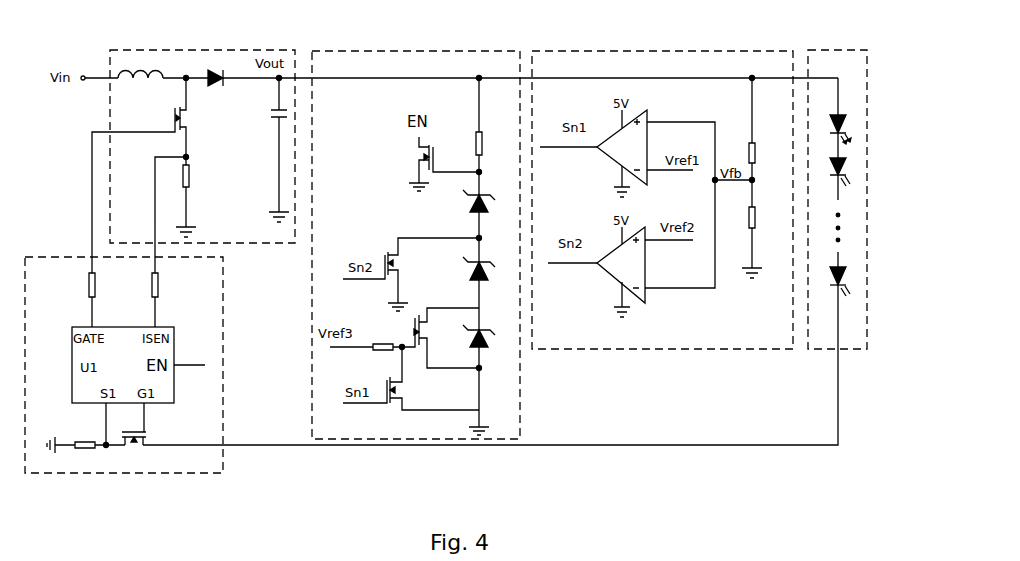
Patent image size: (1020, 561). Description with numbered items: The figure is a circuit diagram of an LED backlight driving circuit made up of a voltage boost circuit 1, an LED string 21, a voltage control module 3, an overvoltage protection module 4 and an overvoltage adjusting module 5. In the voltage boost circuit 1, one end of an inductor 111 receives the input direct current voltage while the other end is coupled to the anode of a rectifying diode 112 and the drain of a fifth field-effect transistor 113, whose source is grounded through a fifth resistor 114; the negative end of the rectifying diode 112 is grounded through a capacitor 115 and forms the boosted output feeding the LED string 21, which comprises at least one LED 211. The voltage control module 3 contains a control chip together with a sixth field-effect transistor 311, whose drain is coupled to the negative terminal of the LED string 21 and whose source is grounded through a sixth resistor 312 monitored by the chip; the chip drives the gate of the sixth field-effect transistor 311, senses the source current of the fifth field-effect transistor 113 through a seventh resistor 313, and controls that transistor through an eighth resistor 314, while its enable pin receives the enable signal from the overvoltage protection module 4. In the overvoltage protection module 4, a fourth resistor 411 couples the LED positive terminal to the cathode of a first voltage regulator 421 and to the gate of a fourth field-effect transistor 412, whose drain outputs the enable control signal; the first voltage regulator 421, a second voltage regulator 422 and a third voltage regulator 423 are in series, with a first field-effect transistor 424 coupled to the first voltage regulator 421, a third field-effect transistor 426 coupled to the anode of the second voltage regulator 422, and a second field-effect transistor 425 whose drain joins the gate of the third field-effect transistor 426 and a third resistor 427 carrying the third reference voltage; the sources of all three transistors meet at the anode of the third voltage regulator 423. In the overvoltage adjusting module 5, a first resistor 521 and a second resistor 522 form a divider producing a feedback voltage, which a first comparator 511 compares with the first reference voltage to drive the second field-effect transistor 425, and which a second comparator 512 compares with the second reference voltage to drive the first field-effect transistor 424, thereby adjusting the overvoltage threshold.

The voltage boost circuit 1 is at (240, 50).
The inductor 111 is at (140, 65).
The rectifying diode 112 is at (219, 68).
The fifth field-effect transistor 113 is at (156, 175).
The fifth resistor 114 is at (190, 214).
The capacitor 115 is at (267, 150).
The voltage control module 3 is at (223, 383).
The sixth field-effect transistor 311 is at (134, 450).
The sixth resistor 312 is at (86, 452).
The seventh resistor 313 is at (168, 300).
The eighth resistor 314 is at (79, 300).
The overvoltage protection module 4 is at (387, 50).
The fourth resistor 411 is at (492, 136).
The fourth field-effect transistor 412 is at (444, 164).
The first voltage regulator 421 is at (489, 226).
The second voltage regulator 422 is at (489, 293).
The third voltage regulator 423 is at (489, 380).
The first field-effect transistor 424 is at (411, 274).
The second field-effect transistor 425 is at (411, 378).
The third field-effect transistor 426 is at (440, 338).
The third resistor 427 is at (367, 338).
The overvoltage adjusting module 5 is at (583, 50).
The first comparator 511 is at (646, 153).
The second comparator 512 is at (631, 248).
The first resistor 521 is at (768, 130).
The second resistor 522 is at (765, 229).
The LED string 21 is at (808, 50).
The LED 211 is at (838, 265).